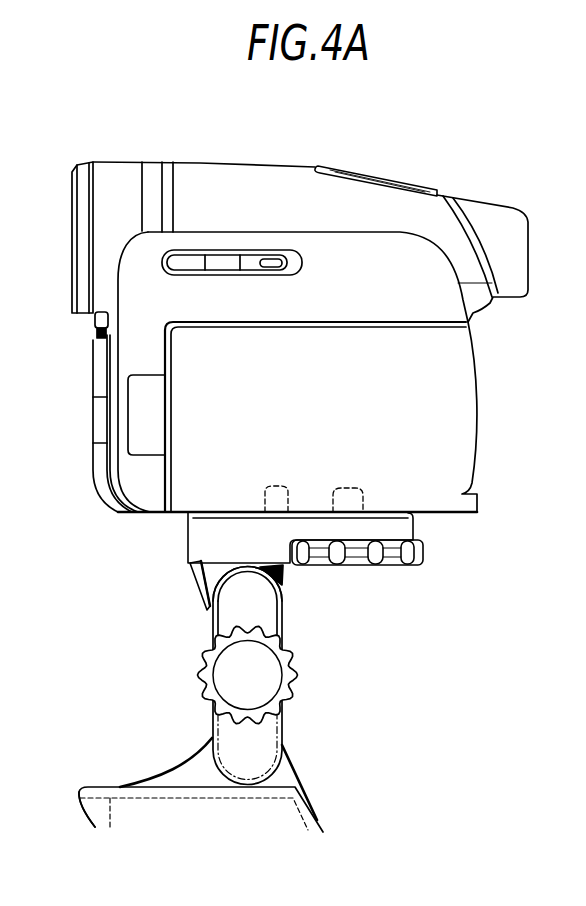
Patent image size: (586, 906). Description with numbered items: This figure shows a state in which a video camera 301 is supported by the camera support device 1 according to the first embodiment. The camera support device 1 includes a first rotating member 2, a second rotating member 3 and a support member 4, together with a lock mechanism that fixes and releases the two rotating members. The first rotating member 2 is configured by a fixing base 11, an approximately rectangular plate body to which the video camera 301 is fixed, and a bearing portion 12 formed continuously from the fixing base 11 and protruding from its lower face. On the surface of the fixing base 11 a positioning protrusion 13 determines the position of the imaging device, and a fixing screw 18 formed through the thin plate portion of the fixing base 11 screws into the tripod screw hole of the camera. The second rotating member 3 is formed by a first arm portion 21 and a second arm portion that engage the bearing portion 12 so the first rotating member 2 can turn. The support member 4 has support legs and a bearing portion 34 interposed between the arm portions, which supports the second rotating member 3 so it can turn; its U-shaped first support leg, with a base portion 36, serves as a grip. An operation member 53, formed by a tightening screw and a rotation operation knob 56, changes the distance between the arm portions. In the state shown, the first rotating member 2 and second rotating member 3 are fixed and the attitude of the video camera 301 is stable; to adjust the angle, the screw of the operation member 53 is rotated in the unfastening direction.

The camera support device 1 is at (97, 540).
The video camera 301 is at (330, 158).
The fixing base 11 is at (199, 535).
The bearing portion 12 is at (207, 578).
The first arm portion 21 is at (225, 613).
The second rotating member 3 is at (288, 622).
The rotation operation knob 56 is at (222, 677).
The operation member 53 is at (304, 690).
The first rotating member 2 is at (407, 572).
The positioning protrusion 13 is at (278, 486).
The fixing screw 18 is at (350, 487).
The base portion 36 is at (120, 807).
The bearing portion 34 is at (193, 772).
The support member 4 is at (329, 813).